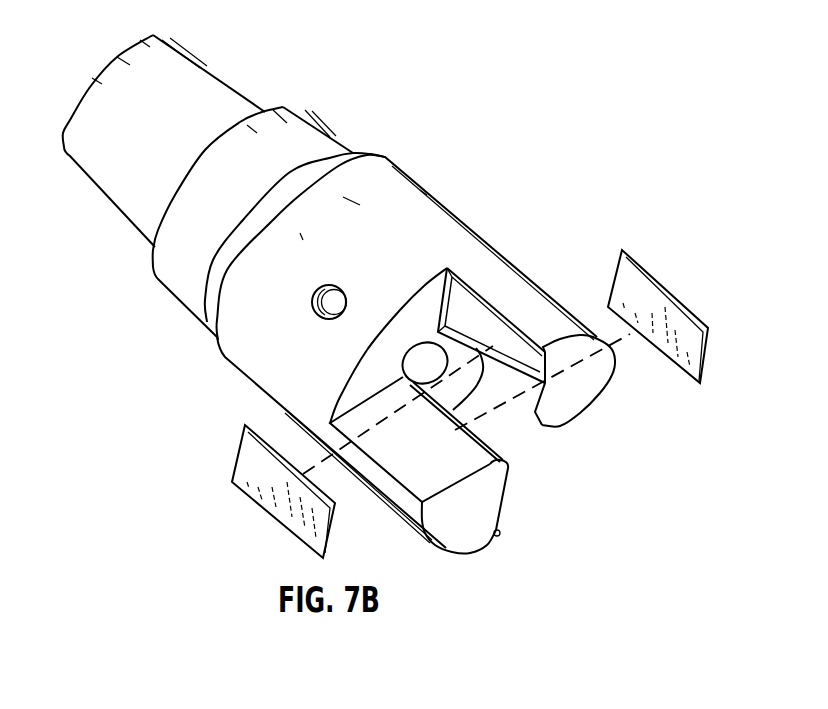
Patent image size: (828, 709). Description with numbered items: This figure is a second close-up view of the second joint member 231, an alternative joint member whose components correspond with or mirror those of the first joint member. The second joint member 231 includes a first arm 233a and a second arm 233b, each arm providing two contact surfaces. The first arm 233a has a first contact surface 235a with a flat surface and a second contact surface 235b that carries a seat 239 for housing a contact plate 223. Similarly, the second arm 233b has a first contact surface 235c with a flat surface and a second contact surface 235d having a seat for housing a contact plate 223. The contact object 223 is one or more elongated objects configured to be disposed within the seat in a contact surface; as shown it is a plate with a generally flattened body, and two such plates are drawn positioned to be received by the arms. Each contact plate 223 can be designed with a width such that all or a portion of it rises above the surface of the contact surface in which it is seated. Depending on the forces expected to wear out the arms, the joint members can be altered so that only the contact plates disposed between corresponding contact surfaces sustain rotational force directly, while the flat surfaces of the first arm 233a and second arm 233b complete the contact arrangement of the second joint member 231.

The second joint member 231 is at (380, 180).
The first arm 233a is at (526, 300).
The second arm 233b is at (470, 530).
The seat 239 is at (485, 332).
The first contact surface 235a is at (577, 423).
The second contact surface 235b is at (533, 347).
The first contact surface 235c is at (400, 452).
The second contact surface 235d is at (520, 497).
The contact object 223 is at (652, 283).